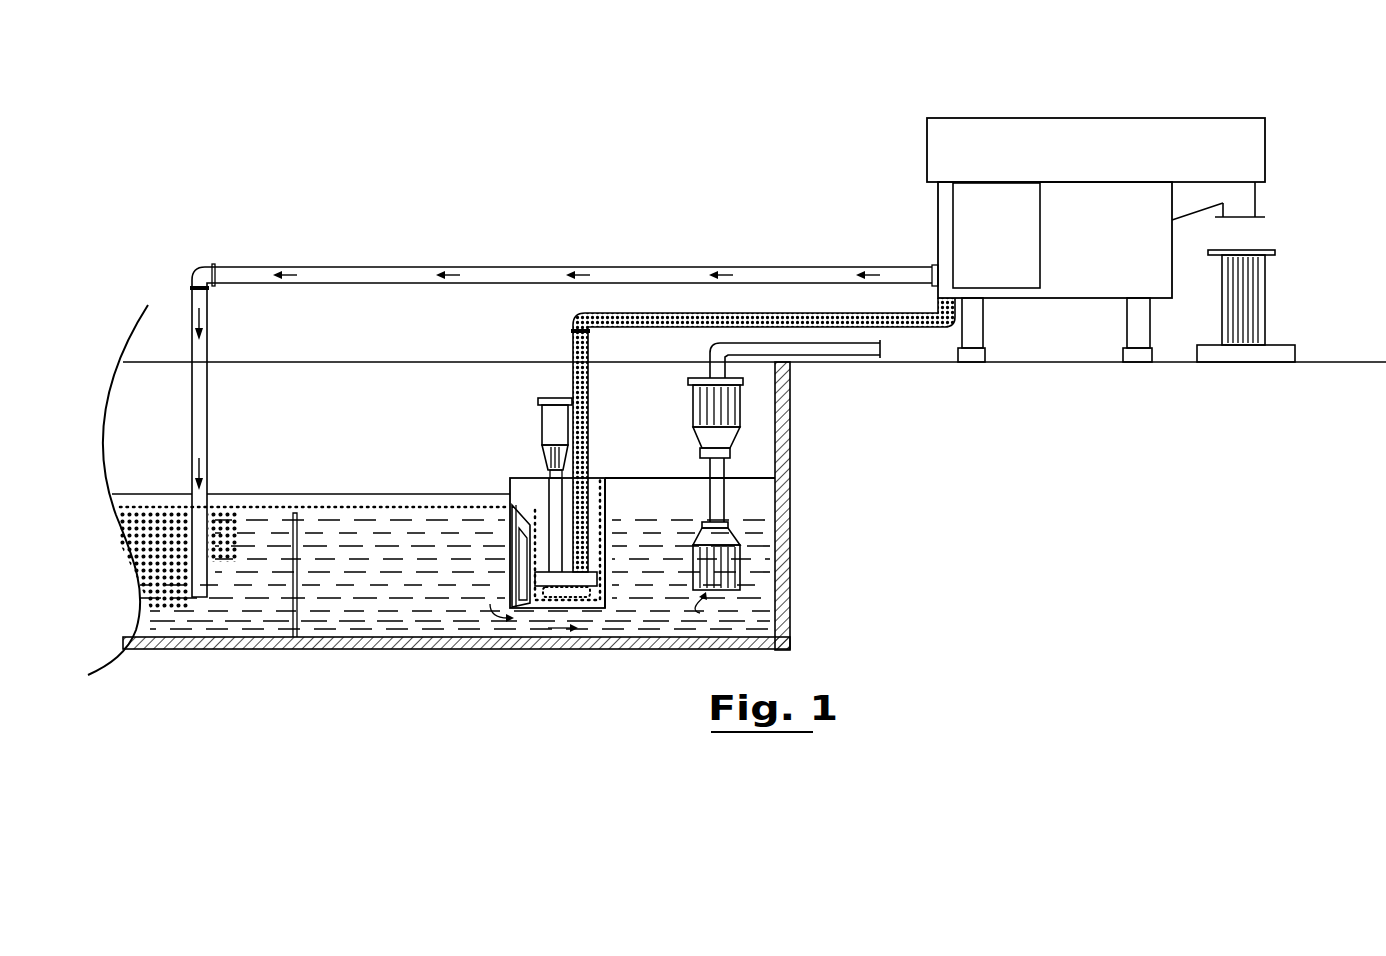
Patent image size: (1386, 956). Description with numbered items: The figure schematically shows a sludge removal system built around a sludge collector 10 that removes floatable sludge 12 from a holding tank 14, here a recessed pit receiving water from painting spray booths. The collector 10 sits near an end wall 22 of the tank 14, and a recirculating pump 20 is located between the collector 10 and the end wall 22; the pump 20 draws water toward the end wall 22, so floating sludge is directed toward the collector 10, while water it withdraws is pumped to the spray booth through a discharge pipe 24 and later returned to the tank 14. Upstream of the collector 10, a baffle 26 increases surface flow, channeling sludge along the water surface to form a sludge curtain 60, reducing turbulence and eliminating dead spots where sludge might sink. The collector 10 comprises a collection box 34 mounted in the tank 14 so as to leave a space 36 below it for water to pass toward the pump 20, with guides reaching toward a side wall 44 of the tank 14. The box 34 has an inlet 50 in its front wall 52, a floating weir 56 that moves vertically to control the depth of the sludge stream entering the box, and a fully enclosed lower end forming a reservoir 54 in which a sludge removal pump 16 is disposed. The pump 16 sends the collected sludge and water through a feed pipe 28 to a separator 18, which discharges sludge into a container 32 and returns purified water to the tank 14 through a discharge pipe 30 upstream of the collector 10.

The sludge collector 10 is at (577, 496).
The floatable sludge 12 is at (158, 515).
The holding tank 14 is at (524, 523).
The sludge removal pump 16 is at (537, 400).
The separator 18 is at (1014, 105).
The recirculating pump 20 is at (730, 530).
The end wall 22 is at (790, 445).
The discharge pipe 24 is at (800, 357).
The baffle 26 is at (287, 613).
The feed pipe 28 is at (648, 313).
The discharge pipe 30 is at (762, 267).
The container 32 is at (1265, 285).
The collection box 34 is at (612, 528).
The space 36 is at (500, 625).
The side wall 44 is at (358, 361).
The inlet 50 is at (455, 557).
The front wall 52 is at (510, 485).
The reservoir 54 is at (598, 600).
The floating weir 56 is at (520, 572).
The sludge curtain 60 is at (353, 506).